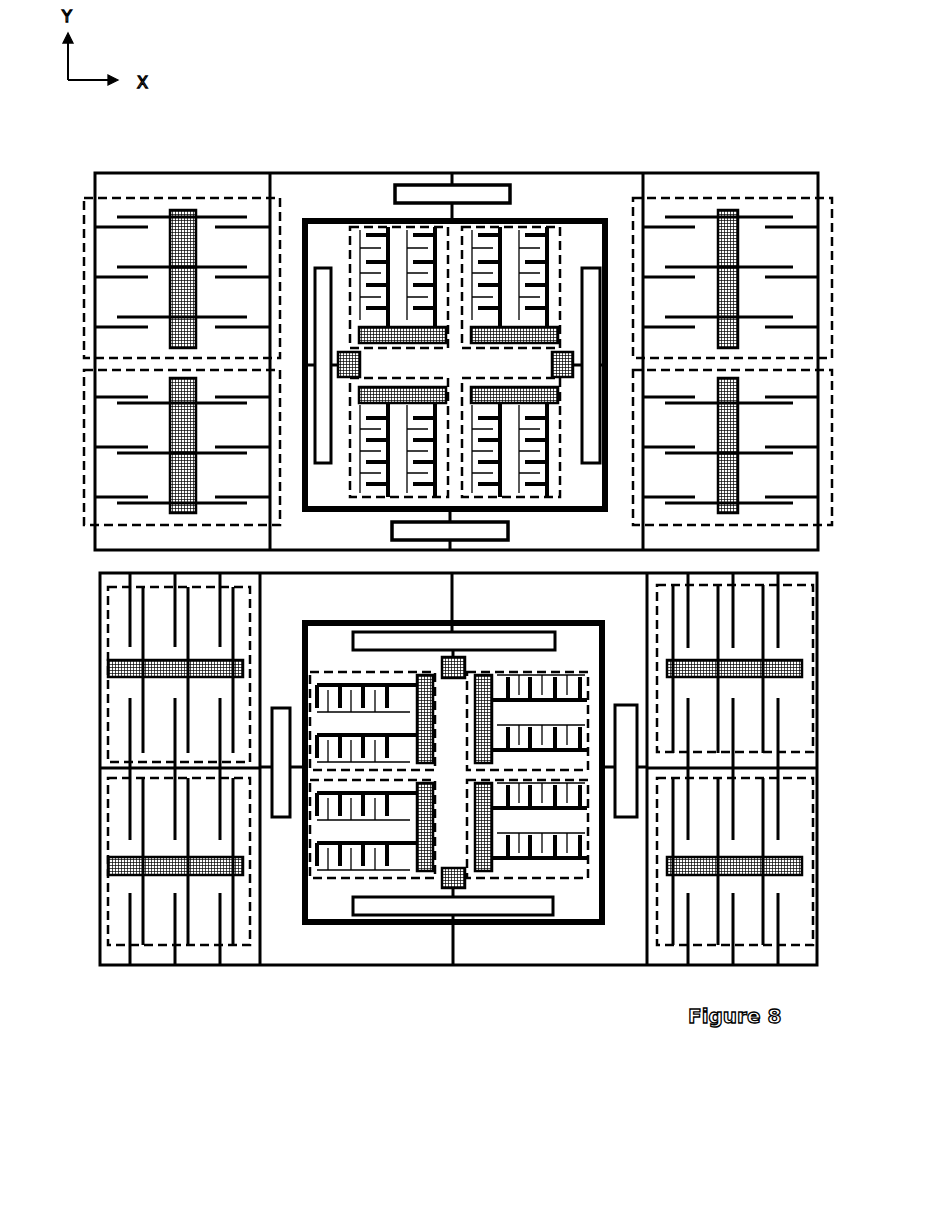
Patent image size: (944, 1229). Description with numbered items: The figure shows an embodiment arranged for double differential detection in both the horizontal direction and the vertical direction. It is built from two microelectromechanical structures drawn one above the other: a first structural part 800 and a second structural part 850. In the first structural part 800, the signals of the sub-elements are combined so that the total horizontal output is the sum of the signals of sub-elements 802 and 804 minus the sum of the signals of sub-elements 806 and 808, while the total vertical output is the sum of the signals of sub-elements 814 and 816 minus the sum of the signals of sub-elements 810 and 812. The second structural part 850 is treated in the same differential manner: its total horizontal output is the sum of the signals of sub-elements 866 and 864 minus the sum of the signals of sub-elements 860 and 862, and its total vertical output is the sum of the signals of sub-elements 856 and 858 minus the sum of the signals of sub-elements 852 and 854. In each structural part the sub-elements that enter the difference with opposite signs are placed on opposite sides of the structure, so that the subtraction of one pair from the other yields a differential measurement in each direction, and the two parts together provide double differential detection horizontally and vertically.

The first structural part 800 is at (505, 173).
The sub-element of first structural part 802 is at (562, 262).
The sub-element of first structural part 804 is at (350, 262).
The sub-element of first structural part 806 is at (562, 452).
The sub-element of first structural part 808 is at (350, 452).
The sub-element of first structural part 810 is at (833, 495).
The sub-element of first structural part 812 is at (833, 295).
The sub-element of first structural part 814 is at (82, 495).
The sub-element of first structural part 816 is at (82, 295).
The second structural part 850 is at (430, 965).
The sub-element of second structural part 852 is at (562, 668).
The sub-element of second structural part 854 is at (350, 668).
The sub-element of second structural part 856 is at (560, 875).
The sub-element of second structural part 858 is at (350, 880).
The sub-element of second structural part 860 is at (813, 890).
The sub-element of second structural part 862 is at (813, 690).
The sub-element of second structural part 864 is at (108, 890).
The sub-element of second structural part 866 is at (108, 690).